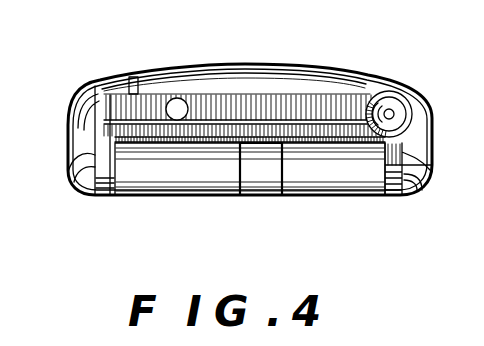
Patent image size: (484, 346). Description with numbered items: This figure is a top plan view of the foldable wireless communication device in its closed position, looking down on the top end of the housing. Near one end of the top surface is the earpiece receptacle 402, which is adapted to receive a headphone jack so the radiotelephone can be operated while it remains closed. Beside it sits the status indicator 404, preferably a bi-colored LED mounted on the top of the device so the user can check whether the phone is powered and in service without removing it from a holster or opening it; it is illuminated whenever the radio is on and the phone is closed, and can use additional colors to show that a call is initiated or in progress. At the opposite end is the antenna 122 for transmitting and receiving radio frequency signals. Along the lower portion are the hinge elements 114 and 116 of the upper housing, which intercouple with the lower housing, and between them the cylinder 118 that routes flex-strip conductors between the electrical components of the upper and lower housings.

The status indicator 404 is at (118, 78).
The earpiece receptacle 402 is at (177, 97).
The antenna 122 is at (387, 109).
The hinge element 114 is at (188, 178).
The cylinder 118 is at (254, 178).
The hinge element 116 is at (310, 178).